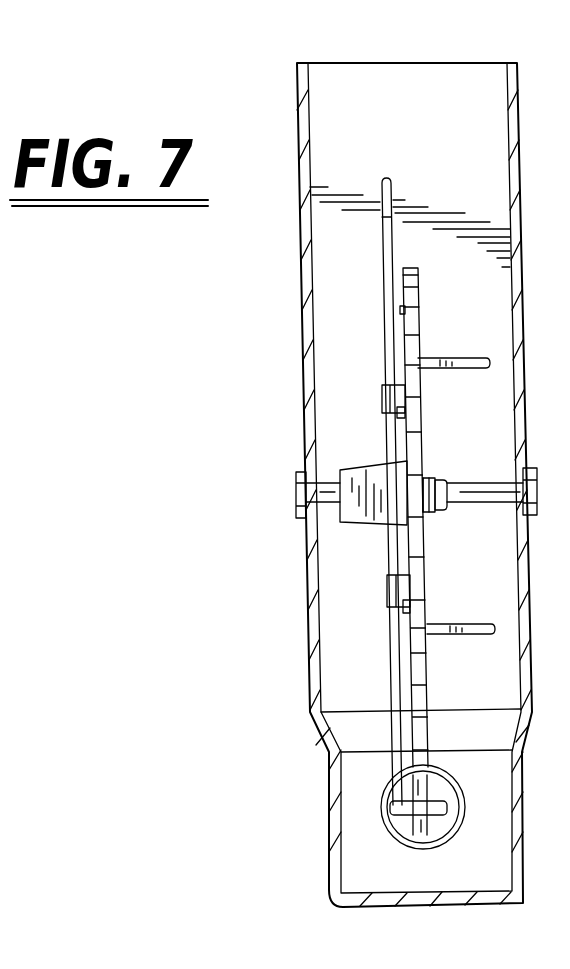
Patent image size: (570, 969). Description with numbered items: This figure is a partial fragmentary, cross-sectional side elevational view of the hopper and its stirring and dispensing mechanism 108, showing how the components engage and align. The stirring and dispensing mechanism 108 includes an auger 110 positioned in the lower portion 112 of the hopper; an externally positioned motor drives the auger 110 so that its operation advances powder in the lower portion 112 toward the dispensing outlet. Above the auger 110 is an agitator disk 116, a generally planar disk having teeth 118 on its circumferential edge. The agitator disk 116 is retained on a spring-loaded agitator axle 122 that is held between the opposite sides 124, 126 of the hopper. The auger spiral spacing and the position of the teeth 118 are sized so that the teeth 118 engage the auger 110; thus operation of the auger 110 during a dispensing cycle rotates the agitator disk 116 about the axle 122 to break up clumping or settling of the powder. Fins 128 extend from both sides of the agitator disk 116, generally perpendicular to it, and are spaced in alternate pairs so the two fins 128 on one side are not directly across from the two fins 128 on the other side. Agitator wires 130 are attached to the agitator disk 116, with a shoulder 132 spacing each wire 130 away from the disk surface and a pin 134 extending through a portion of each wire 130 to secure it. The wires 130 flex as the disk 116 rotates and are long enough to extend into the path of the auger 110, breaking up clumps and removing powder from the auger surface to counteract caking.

The stirring and dispensing mechanism 108 is at (402, 178).
The auger 110 is at (390, 812).
The lower portion 112 is at (328, 848).
The agitator disk 116 is at (402, 312).
The teeth 118 is at (446, 668).
The spring-loaded agitator axle 122 is at (318, 484).
The side of hopper 124 is at (508, 130).
The side of hopper 126 is at (300, 108).
The fins 128 is at (466, 358).
The agitator wires 130 is at (385, 327).
The shoulder 132 is at (400, 414).
The pin 134 is at (382, 397).